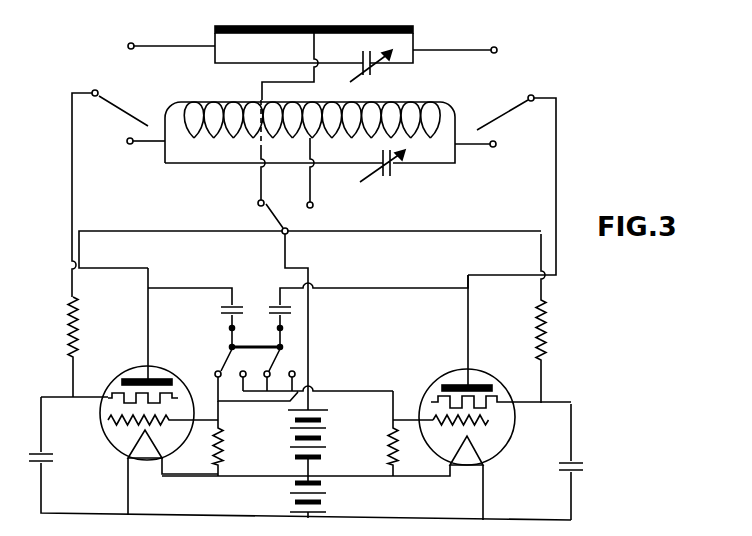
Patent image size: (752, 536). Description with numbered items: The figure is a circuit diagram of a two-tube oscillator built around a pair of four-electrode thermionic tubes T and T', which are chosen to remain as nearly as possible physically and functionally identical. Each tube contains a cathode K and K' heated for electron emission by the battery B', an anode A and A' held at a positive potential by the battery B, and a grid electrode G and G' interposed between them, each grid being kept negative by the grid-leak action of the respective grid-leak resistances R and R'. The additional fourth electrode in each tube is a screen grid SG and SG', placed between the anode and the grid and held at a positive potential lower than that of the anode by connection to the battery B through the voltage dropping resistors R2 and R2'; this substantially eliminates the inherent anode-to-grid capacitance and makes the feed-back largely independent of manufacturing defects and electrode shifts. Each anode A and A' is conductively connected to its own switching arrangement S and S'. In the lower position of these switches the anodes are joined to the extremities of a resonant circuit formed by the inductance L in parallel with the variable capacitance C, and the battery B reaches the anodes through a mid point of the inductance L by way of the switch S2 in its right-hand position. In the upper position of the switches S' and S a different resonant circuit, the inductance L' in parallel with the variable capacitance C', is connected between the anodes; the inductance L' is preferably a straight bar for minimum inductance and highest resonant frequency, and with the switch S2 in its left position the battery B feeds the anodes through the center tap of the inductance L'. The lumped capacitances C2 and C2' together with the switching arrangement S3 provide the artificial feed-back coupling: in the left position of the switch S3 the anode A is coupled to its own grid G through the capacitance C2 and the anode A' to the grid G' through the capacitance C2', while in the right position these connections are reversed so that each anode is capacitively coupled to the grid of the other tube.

The inductance L' is at (312, 35).
The variable capacitance C' is at (375, 70).
The inductance L is at (311, 117).
The variable capacitance C is at (387, 172).
The switching arrangement S' is at (110, 182).
The switching arrangement S is at (512, 173).
The switch S2 is at (286, 211).
The lumped capacitance C2' is at (195, 316).
The lumped capacitance C2 is at (357, 311).
The switching arrangement S3 is at (258, 349).
The voltage dropping resistor R2' is at (50, 347).
The voltage dropping resistor R2 is at (559, 318).
The thermionic tube T' is at (300, 443).
The thermionic tube T is at (501, 444).
The anode A' is at (152, 326).
The anode A is at (474, 333).
The screen grid SG' is at (115, 406).
The screen grid SG is at (501, 411).
The grid electrode G' is at (144, 430).
The grid electrode G is at (481, 435).
The cathode K' is at (173, 472).
The cathode K is at (438, 478).
The grid-leak resistance R' is at (277, 438).
The grid-leak resistance R is at (410, 433).
The battery B is at (319, 443).
The battery B' is at (322, 497).